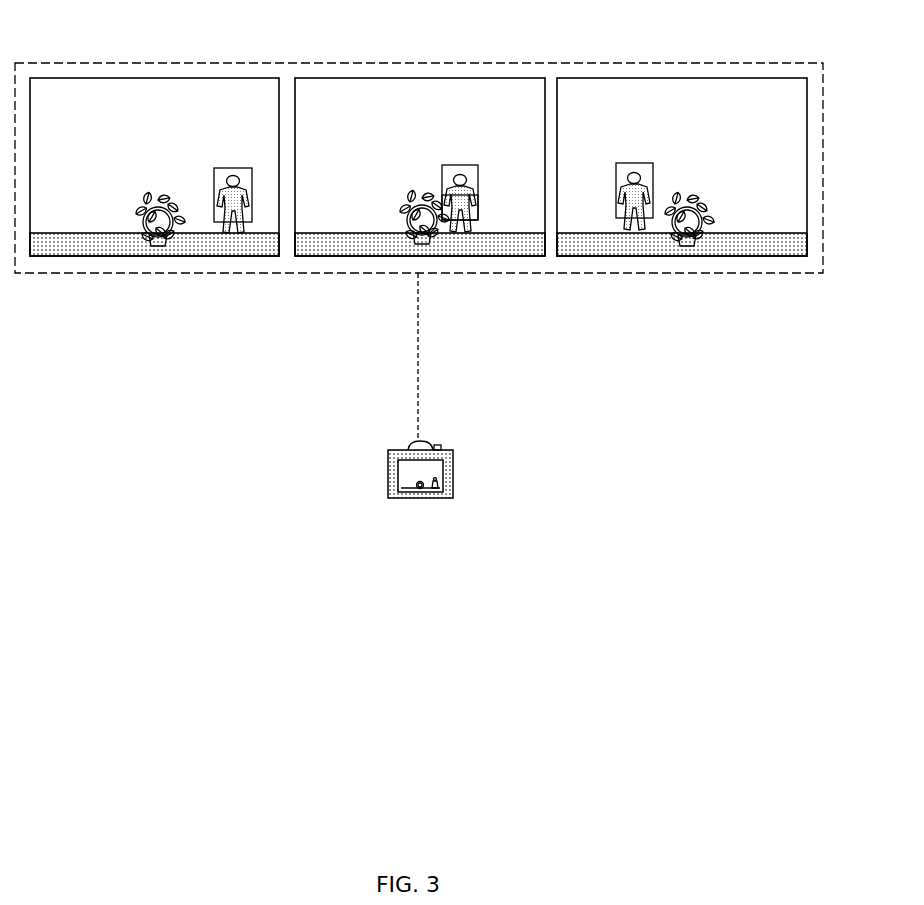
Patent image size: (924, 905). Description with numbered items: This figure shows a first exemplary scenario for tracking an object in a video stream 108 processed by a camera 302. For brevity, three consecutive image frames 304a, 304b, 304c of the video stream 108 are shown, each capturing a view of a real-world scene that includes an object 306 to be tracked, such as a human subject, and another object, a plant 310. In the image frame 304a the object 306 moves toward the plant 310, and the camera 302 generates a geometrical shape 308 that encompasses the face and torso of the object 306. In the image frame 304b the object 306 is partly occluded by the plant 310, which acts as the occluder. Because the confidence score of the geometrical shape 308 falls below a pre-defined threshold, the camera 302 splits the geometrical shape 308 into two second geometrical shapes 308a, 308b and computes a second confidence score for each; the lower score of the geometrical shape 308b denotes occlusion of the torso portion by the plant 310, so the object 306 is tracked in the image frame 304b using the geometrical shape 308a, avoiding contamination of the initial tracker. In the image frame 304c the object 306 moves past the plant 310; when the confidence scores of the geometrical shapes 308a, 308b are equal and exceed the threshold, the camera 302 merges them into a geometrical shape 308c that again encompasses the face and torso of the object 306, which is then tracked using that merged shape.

The video stream 108 is at (787, 63).
The camera 302 is at (455, 483).
The image frame 304a is at (42, 77).
The image frame 304b is at (303, 77).
The image frame 304c is at (578, 77).
The object 306 is at (237, 200).
The geometrical shape 308 is at (231, 168).
The geometrical shape 308a is at (479, 166).
The geometrical shape 308b is at (480, 215).
The geometrical shape 308c is at (636, 163).
The plant 310 is at (152, 238).